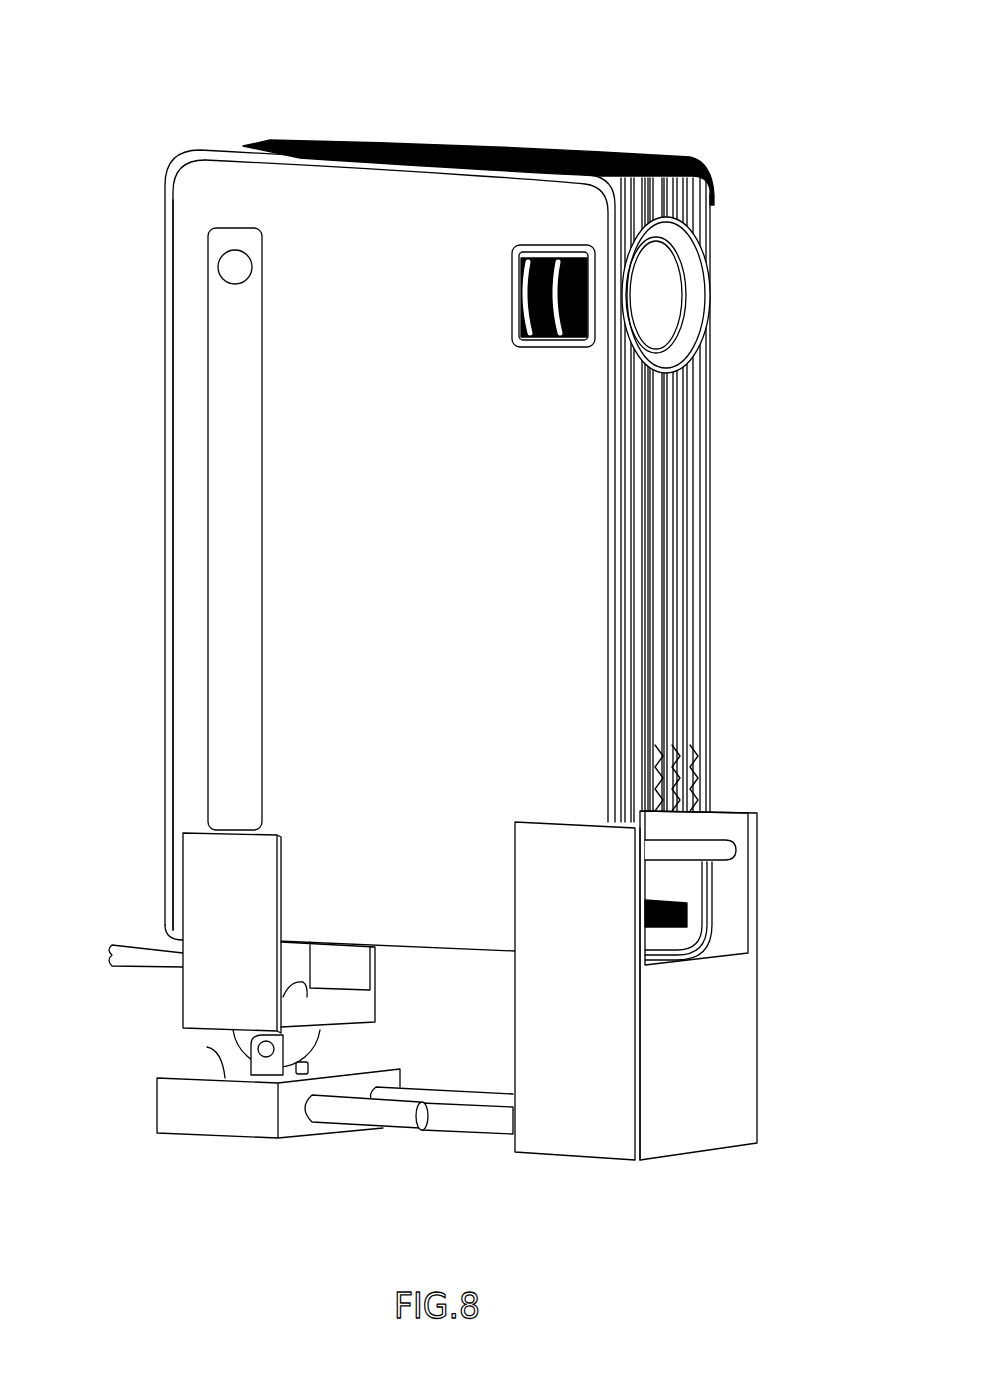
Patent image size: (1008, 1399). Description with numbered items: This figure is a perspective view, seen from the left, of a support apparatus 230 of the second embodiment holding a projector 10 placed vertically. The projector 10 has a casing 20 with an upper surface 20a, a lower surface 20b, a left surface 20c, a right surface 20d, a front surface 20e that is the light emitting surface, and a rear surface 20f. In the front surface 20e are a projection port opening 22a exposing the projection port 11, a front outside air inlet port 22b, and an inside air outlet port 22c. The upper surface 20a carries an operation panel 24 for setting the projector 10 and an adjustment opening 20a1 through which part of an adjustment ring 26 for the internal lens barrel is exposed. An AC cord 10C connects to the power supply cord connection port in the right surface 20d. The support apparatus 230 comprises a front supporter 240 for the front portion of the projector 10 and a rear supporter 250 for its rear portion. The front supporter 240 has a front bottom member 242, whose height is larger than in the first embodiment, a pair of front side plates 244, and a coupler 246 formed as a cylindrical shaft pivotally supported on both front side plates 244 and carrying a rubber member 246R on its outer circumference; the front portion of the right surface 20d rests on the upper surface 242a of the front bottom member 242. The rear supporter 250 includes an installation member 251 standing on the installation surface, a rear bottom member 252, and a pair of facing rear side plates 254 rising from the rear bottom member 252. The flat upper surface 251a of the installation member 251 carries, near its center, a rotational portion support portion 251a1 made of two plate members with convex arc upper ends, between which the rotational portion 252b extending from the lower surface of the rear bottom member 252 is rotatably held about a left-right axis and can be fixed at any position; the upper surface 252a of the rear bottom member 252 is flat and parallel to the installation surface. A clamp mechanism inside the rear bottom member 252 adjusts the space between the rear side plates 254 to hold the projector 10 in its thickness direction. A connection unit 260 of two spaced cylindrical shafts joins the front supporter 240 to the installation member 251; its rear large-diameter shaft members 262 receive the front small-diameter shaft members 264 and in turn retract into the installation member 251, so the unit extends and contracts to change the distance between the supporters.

The projector 10 is at (436, 513).
The AC cord 10C is at (147, 947).
The projection port 11 is at (656, 288).
The casing 20 is at (436, 537).
The upper surface 20a is at (342, 470).
The adjustment opening 20a1 is at (536, 249).
The lower surface 20b is at (723, 500).
The left surface 20c is at (393, 146).
The right surface 20d is at (420, 950).
The front surface 20e is at (683, 598).
The rear surface 20f is at (152, 510).
The projection port opening 22a is at (690, 352).
The front outside air inlet port 22b is at (648, 668).
The inside air outlet port 22c is at (671, 834).
The operation panel 24 is at (232, 373).
The adjustment ring 26 is at (571, 258).
The support apparatus 230 is at (425, 1184).
The front supporter 240 is at (659, 1046).
The front bottom member 242 is at (760, 985).
The upper surface of front bottom member 242a is at (763, 901).
The front side plates 244 is at (732, 890).
The coupler 246 is at (685, 850).
The rubber member 246R is at (700, 857).
The rear supporter 250 is at (219, 1057).
The installation member 251 is at (188, 1107).
The upper surface of installation member 251a is at (207, 1047).
The rotational portion support portion 251a1 is at (268, 1067).
The rear bottom member 252 is at (347, 1020).
The upper surface of rear bottom member 252a is at (300, 988).
The rotational portion 252b is at (298, 1045).
The rear side plates 254 is at (340, 955).
The connection unit 260 is at (457, 1134).
The large-diameter shaft members 262 is at (357, 1112).
The small-diameter shaft members 264 is at (500, 1103).